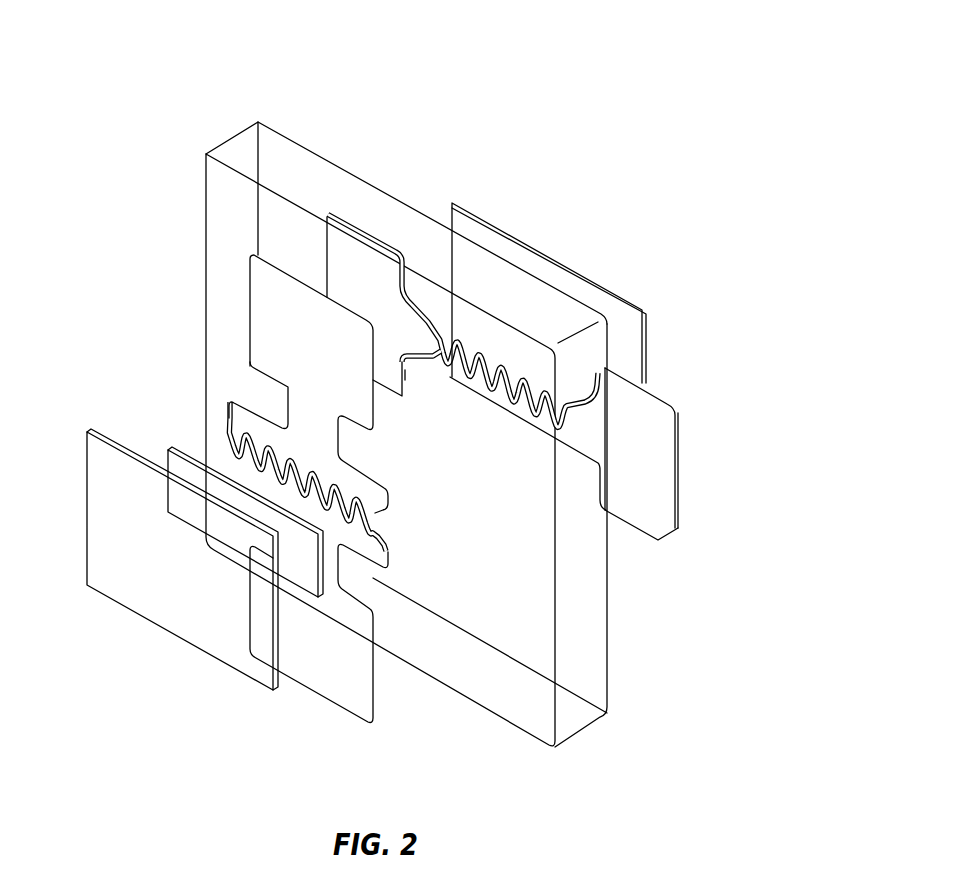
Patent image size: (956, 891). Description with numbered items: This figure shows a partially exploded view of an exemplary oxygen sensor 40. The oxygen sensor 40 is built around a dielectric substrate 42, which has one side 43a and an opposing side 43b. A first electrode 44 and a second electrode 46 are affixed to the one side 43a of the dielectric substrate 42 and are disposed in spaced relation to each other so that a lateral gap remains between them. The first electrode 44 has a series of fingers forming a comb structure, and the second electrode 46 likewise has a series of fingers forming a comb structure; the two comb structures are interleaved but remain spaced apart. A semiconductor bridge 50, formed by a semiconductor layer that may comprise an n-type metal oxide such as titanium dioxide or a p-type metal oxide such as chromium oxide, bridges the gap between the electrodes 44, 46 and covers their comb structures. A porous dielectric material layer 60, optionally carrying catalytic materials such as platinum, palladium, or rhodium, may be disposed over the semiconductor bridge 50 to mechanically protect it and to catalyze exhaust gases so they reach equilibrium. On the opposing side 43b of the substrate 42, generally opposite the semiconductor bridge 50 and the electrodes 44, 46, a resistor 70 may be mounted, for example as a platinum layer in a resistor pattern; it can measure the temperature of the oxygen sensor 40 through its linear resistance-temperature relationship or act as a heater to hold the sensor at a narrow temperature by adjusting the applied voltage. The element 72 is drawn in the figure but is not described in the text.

The oxygen sensor 40 is at (540, 77).
The dielectric substrate 42 is at (217, 168).
The side of dielectric substrate 43a is at (217, 185).
The opposing side of dielectric substrate 43b is at (307, 143).
The first electrode 44 is at (325, 677).
The second electrode 46 is at (250, 280).
The semiconductor bridge 50 is at (178, 467).
The porous dielectric material layer 60 is at (100, 457).
The resistor 70 is at (648, 420).
The stiffener plate 72 is at (612, 256).